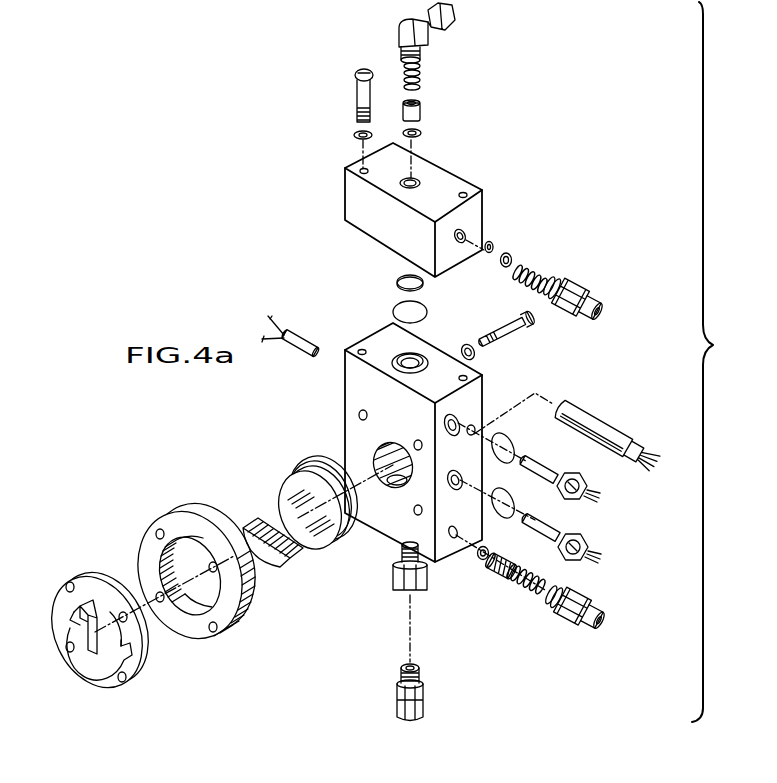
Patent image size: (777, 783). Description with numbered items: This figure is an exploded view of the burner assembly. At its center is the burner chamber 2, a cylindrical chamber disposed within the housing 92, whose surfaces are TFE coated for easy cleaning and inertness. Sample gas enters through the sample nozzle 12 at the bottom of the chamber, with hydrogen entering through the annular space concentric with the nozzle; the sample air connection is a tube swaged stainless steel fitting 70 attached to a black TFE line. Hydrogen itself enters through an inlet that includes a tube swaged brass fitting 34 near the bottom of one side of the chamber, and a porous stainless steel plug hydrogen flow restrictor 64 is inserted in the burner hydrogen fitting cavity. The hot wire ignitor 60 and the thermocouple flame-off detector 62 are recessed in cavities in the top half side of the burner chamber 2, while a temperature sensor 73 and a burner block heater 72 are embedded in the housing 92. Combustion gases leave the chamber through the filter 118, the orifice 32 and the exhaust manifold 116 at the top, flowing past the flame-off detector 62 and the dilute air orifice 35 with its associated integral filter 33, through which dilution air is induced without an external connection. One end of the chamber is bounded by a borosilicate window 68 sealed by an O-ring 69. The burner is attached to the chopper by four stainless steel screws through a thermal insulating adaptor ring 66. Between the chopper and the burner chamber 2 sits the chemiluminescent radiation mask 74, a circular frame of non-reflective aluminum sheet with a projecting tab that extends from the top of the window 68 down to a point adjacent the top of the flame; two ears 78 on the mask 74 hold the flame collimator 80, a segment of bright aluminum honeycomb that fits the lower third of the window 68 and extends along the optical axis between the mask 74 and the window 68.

The burner chamber 2 is at (345, 413).
The sample nozzle 12 is at (393, 580).
The orifice 32 is at (420, 112).
The integral filter 33 is at (586, 302).
The tube swaged brass fitting 34 is at (602, 602).
The dilute air orifice 35 is at (510, 258).
The ignitor 60 is at (588, 530).
The flame-off detector 62 is at (553, 478).
The hydrogen flow restrictor 64 is at (498, 571).
The thermal insulating adaptor ring 66 is at (246, 608).
The borosilicate window 68 is at (283, 490).
The O-ring 69 is at (322, 466).
The tube swaged stainless steel fitting 70 is at (395, 692).
The burner block heater 72 is at (590, 420).
The temperature sensor 73 is at (315, 338).
The chemiluminescent radiation mask 74 is at (82, 638).
The ears 78 is at (74, 622).
The flame collimator 80 is at (283, 564).
The housing 92 is at (477, 391).
The exhaust manifold 116 is at (345, 186).
The filter 118 is at (396, 280).